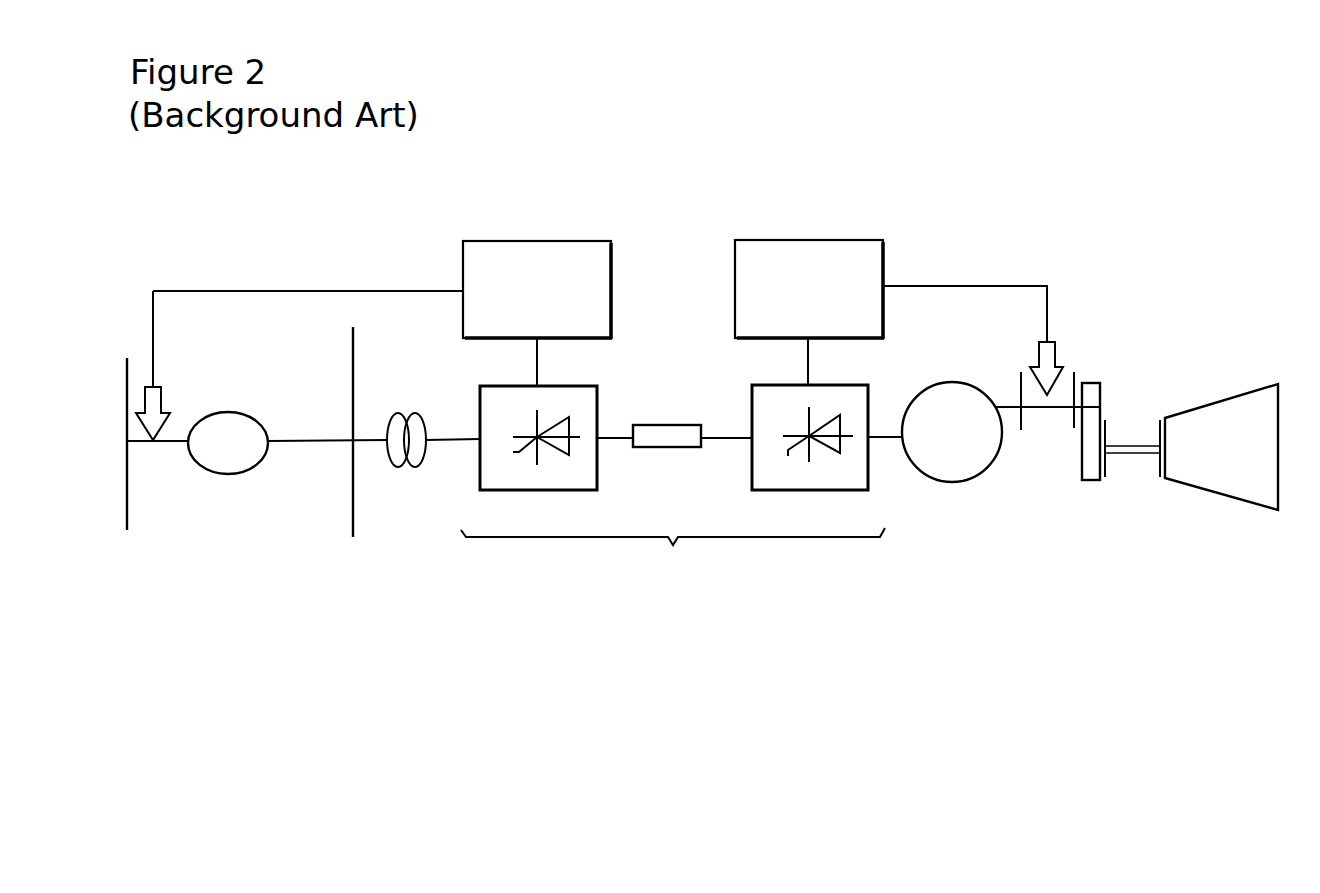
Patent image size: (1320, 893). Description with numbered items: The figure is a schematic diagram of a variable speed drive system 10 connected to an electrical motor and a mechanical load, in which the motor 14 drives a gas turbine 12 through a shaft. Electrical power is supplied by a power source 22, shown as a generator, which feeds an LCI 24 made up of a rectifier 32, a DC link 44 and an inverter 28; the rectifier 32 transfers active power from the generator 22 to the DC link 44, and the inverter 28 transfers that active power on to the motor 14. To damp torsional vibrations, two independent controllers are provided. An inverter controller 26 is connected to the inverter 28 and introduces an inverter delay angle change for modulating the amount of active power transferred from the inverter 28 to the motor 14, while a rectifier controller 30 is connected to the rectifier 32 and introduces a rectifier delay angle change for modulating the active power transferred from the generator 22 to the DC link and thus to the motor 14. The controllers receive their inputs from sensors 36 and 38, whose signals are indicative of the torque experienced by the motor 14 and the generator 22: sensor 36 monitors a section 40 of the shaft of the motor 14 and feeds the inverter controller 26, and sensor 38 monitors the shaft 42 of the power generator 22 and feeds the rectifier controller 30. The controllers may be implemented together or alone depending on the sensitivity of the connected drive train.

The system 10 is at (1168, 280).
The gas turbine 12 is at (1225, 497).
The motor 14 is at (932, 479).
The power source 22 is at (233, 475).
The LCI 24 is at (673, 550).
The inverter controller 26 is at (804, 240).
The inverter 28 is at (850, 385).
The rectifier controller 30 is at (541, 241).
The rectifier 32 is at (577, 386).
The sensor 36 is at (1055, 360).
The sensor 38 is at (158, 398).
The shaft section 40 is at (1028, 410).
The shaft 42 is at (170, 445).
The DC link 44 is at (662, 425).